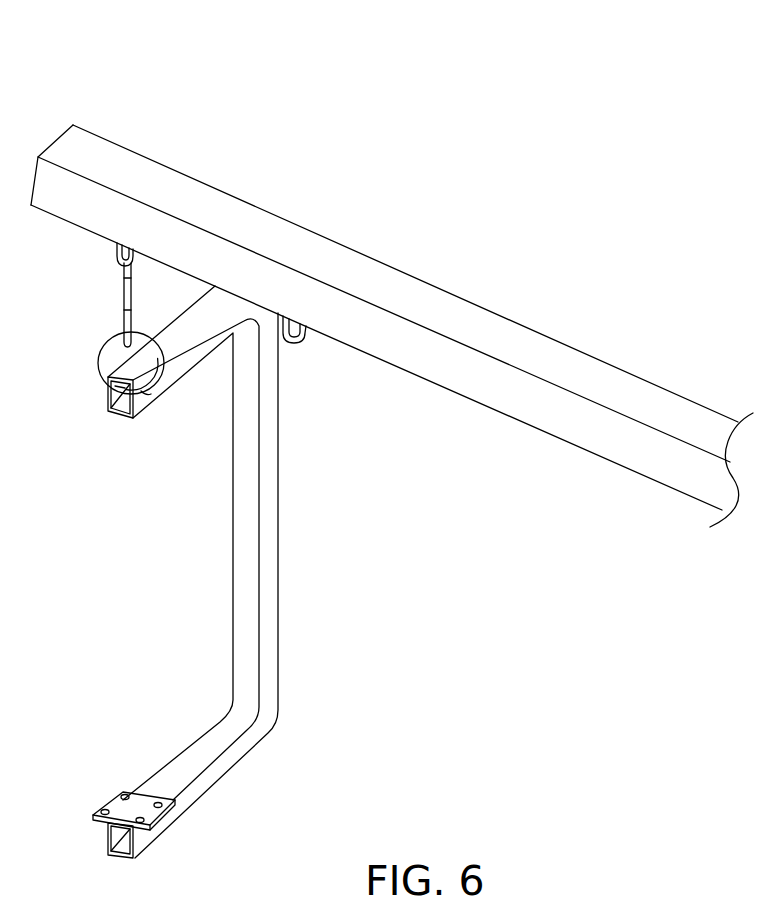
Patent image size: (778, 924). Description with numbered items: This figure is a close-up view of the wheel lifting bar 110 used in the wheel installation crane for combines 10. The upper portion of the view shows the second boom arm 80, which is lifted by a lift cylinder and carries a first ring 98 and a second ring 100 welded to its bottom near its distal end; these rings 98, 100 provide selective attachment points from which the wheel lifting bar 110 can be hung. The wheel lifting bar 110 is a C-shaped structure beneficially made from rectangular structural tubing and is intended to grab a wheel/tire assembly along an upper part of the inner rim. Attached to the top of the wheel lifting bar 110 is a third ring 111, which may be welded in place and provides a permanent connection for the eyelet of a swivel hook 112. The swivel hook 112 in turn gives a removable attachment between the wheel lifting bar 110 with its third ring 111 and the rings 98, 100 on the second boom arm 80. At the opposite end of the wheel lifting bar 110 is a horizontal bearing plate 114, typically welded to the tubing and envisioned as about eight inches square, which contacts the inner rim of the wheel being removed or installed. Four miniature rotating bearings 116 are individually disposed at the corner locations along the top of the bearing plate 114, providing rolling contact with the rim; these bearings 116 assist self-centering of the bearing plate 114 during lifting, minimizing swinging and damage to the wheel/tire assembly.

The wheel installation crane for combines 10 is at (612, 68).
The second boom arm 80 is at (545, 350).
The first ring 98 is at (297, 346).
The second ring 100 is at (117, 254).
The wheel lifting bar 110 is at (246, 505).
The third ring 111 is at (98, 358).
The swivel hook 112 is at (123, 295).
The bearing plate 114 is at (137, 833).
The miniature rotating bearings 116 is at (157, 803).